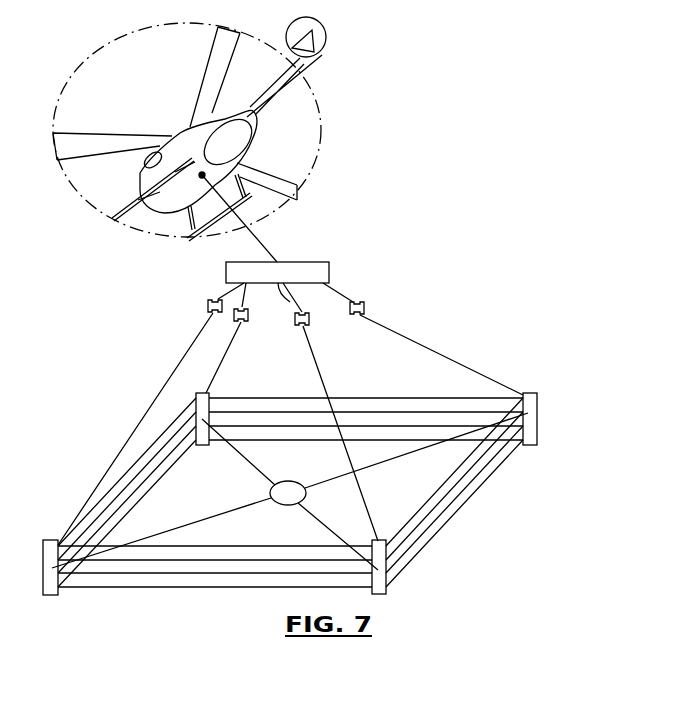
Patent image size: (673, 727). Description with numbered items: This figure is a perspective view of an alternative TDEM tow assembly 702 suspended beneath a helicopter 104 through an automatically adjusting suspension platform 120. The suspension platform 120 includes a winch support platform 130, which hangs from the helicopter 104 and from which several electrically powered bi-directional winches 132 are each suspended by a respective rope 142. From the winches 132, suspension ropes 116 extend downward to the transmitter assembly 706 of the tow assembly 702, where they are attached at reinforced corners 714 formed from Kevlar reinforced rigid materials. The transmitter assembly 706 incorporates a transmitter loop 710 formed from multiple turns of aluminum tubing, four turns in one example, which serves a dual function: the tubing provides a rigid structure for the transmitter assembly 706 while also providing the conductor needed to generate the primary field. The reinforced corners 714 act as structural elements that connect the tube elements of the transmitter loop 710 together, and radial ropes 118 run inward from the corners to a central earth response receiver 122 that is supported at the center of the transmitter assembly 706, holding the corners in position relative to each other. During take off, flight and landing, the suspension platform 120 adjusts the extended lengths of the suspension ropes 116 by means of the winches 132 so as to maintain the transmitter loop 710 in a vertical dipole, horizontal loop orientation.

The helicopter 104 is at (280, 98).
The TDEM tow assembly 702 is at (562, 280).
The suspension platform 120 is at (137, 248).
The winch support platform 130 is at (320, 270).
The rope 142 is at (287, 262).
The winch 132 is at (207, 307).
The suspension rope 116 is at (150, 407).
The radial rope 118 is at (243, 455).
The central earth response receiver 122 is at (285, 485).
The reinforced corner 714 is at (533, 408).
The transmitter assembly 706 is at (485, 486).
The transmitter loop 710 is at (418, 543).